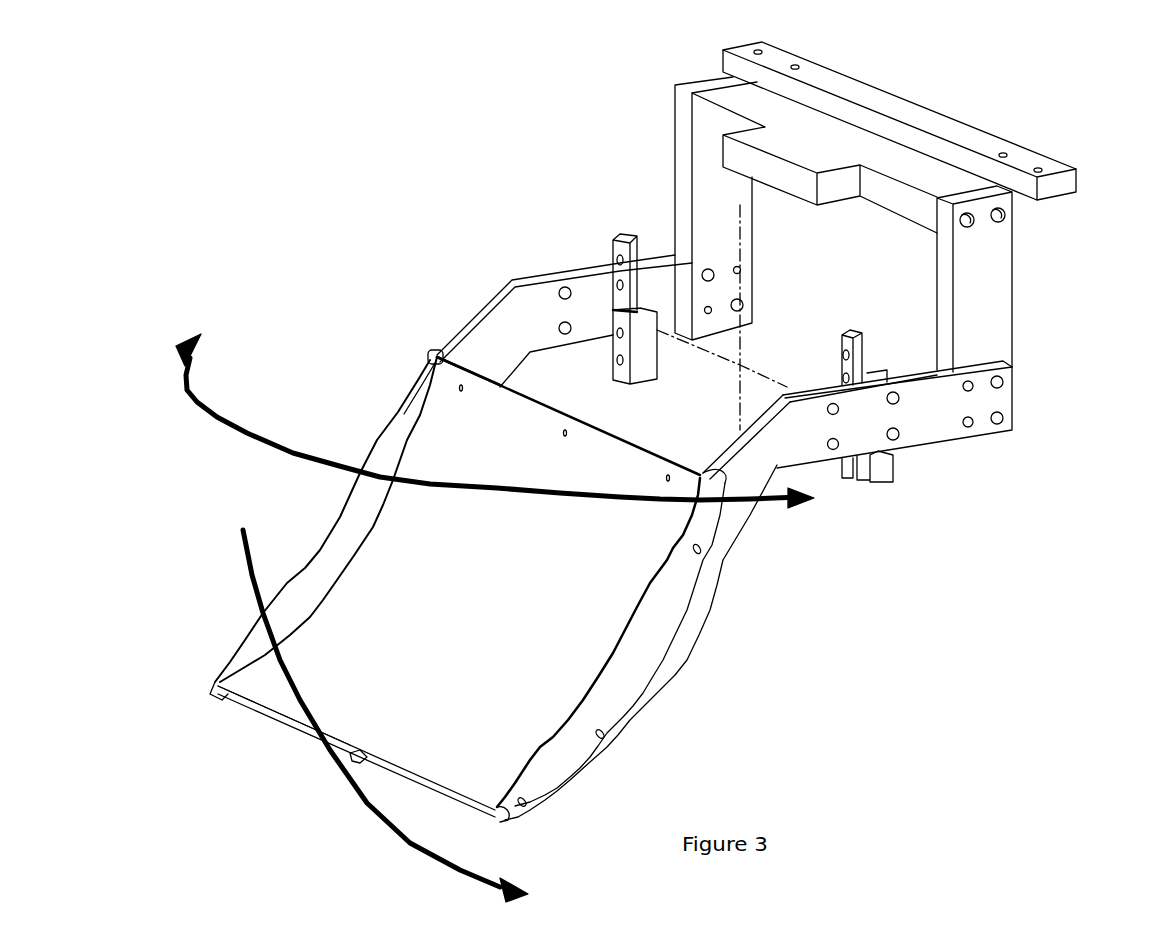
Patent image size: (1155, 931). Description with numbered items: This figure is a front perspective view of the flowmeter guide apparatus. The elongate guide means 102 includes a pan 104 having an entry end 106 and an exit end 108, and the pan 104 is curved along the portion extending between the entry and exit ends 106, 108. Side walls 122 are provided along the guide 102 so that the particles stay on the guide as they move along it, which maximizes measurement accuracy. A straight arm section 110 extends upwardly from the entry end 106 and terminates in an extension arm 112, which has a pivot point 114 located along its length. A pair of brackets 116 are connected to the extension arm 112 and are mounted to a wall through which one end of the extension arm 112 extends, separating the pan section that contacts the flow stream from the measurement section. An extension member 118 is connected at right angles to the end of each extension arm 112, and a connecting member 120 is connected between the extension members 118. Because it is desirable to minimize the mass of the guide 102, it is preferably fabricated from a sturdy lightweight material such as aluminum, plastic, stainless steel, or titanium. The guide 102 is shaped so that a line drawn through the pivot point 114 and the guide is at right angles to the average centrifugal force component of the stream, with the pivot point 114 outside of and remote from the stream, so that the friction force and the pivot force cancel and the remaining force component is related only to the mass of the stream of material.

The elongate guide means 102 is at (718, 632).
The pan 104 is at (473, 636).
The entry end 106 is at (467, 405).
The exit end 108 is at (263, 693).
The straight arm section 110 is at (498, 337).
The extension arm 112 is at (866, 430).
The pivot point 114 is at (750, 367).
The brackets 116 is at (608, 233).
The extension member 118 is at (707, 180).
The connecting member 120 is at (823, 120).
The side walls 122 is at (323, 563).